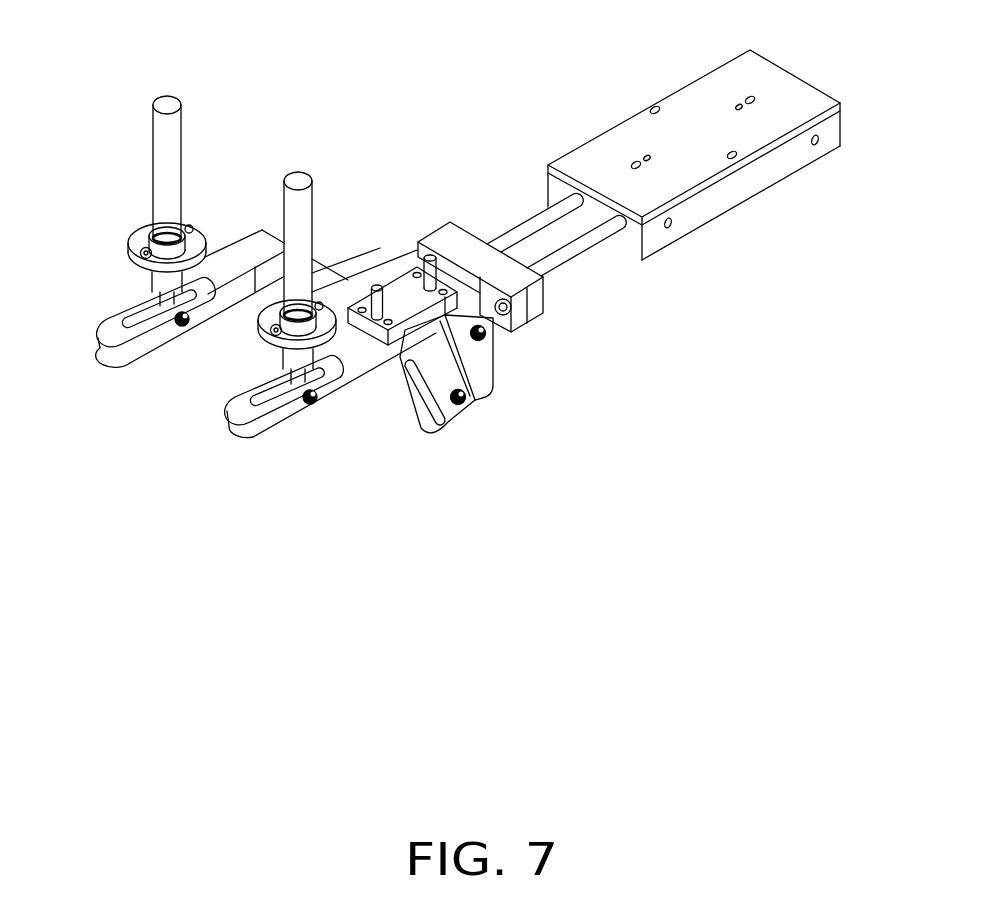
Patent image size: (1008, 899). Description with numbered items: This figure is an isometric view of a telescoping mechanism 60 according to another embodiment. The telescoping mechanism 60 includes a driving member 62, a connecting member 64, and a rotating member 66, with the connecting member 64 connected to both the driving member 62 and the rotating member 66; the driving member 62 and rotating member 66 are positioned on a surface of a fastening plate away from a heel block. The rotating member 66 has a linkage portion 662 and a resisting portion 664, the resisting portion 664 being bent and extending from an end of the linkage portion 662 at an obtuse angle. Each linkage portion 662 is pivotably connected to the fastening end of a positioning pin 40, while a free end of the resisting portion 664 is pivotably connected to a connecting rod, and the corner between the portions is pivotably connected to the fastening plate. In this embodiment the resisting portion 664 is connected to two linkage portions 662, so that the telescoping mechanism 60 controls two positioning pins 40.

The telescoping mechanism 60 is at (389, 39).
The driving member 62 is at (795, 95).
The connecting member 64 is at (487, 362).
The rotating member 66 is at (353, 377).
The linkage portion 662 is at (237, 430).
The resisting portion 664 is at (410, 405).
The positioning pin 40 is at (165, 152).